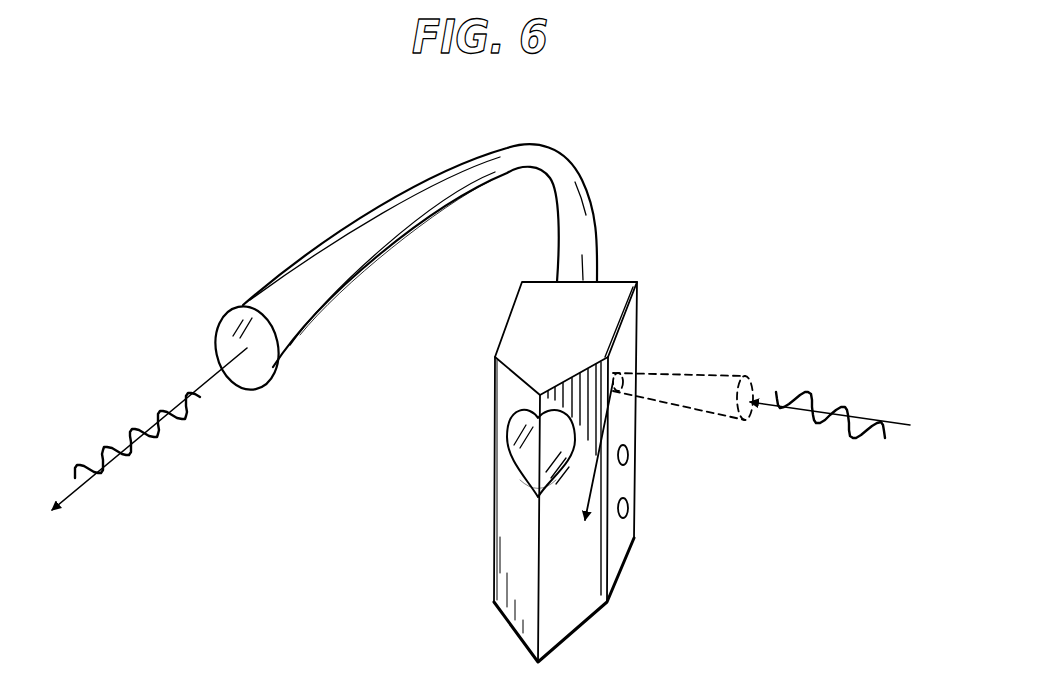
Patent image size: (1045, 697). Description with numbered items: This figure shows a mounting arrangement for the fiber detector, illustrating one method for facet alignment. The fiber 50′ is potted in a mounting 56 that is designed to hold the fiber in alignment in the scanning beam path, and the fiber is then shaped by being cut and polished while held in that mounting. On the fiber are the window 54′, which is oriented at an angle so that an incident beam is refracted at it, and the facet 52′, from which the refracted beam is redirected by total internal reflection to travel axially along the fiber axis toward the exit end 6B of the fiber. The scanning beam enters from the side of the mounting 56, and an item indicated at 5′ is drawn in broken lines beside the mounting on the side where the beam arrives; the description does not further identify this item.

The fiber 50′ is at (346, 190).
The exit end 6B is at (223, 348).
The mounting 56 is at (612, 292).
The facet 52′ is at (518, 462).
The window 54′ is at (538, 490).
The fiber connector 5′ is at (695, 402).